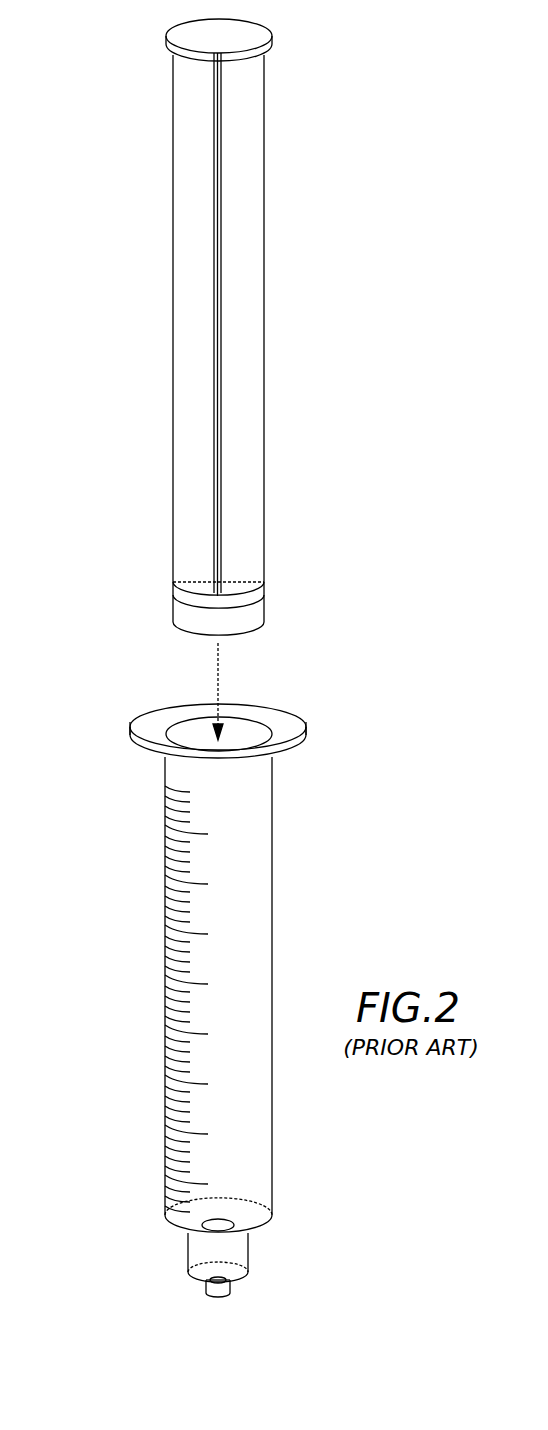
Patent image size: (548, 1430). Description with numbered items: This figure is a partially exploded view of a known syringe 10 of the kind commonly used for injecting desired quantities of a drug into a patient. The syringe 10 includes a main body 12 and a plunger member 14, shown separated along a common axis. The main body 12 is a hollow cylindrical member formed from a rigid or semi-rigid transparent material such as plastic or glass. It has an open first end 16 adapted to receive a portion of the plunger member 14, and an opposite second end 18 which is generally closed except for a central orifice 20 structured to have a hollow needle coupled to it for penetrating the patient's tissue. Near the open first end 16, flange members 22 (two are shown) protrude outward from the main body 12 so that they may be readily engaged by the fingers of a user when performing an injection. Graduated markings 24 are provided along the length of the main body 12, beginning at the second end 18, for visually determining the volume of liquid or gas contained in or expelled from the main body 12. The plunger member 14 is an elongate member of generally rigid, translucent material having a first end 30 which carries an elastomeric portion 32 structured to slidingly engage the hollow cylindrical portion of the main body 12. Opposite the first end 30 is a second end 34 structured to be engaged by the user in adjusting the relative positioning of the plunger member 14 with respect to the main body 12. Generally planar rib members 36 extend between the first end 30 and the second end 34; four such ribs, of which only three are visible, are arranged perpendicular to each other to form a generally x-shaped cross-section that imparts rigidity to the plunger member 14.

The syringe 10 is at (421, 654).
The main body 12 is at (371, 875).
The plunger member 14 is at (335, 248).
The open first end 16 is at (297, 684).
The second end 18 is at (303, 1231).
The central orifice 20 is at (203, 1316).
The flange members 22 is at (112, 769).
The graduated markings 24 is at (149, 989).
The first end 30 is at (169, 647).
The elastomeric portion 32 is at (183, 612).
The second end 34 is at (304, 35).
The planar rib members 36 is at (253, 95).